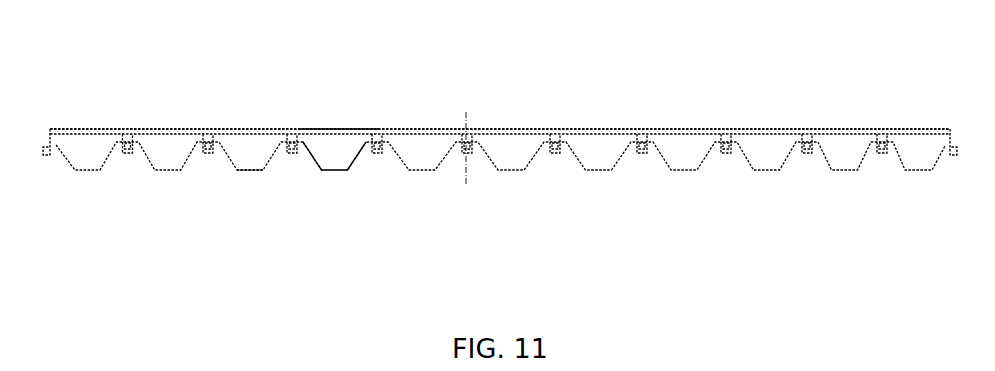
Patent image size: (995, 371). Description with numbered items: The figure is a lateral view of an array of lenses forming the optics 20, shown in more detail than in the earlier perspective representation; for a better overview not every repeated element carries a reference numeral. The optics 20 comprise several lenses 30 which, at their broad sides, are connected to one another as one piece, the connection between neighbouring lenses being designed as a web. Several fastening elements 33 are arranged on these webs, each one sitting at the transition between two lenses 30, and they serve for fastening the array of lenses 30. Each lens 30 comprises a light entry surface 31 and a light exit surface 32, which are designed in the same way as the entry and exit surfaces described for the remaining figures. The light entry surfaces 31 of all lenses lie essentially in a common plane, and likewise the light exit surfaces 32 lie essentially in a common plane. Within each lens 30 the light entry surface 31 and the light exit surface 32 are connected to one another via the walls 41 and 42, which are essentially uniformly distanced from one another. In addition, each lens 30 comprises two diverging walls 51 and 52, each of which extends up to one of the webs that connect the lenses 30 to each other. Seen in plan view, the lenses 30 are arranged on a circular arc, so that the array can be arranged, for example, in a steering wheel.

The optics 20 is at (742, 98).
The lens 30 is at (163, 160).
The light entry surface 31 is at (247, 170).
The light exit surface 32 is at (257, 128).
The fastening element 33 is at (723, 143).
The wall 41 is at (333, 145).
The wall 42 is at (339, 119).
The diverging wall 51 is at (313, 153).
The diverging wall 52 is at (358, 152).